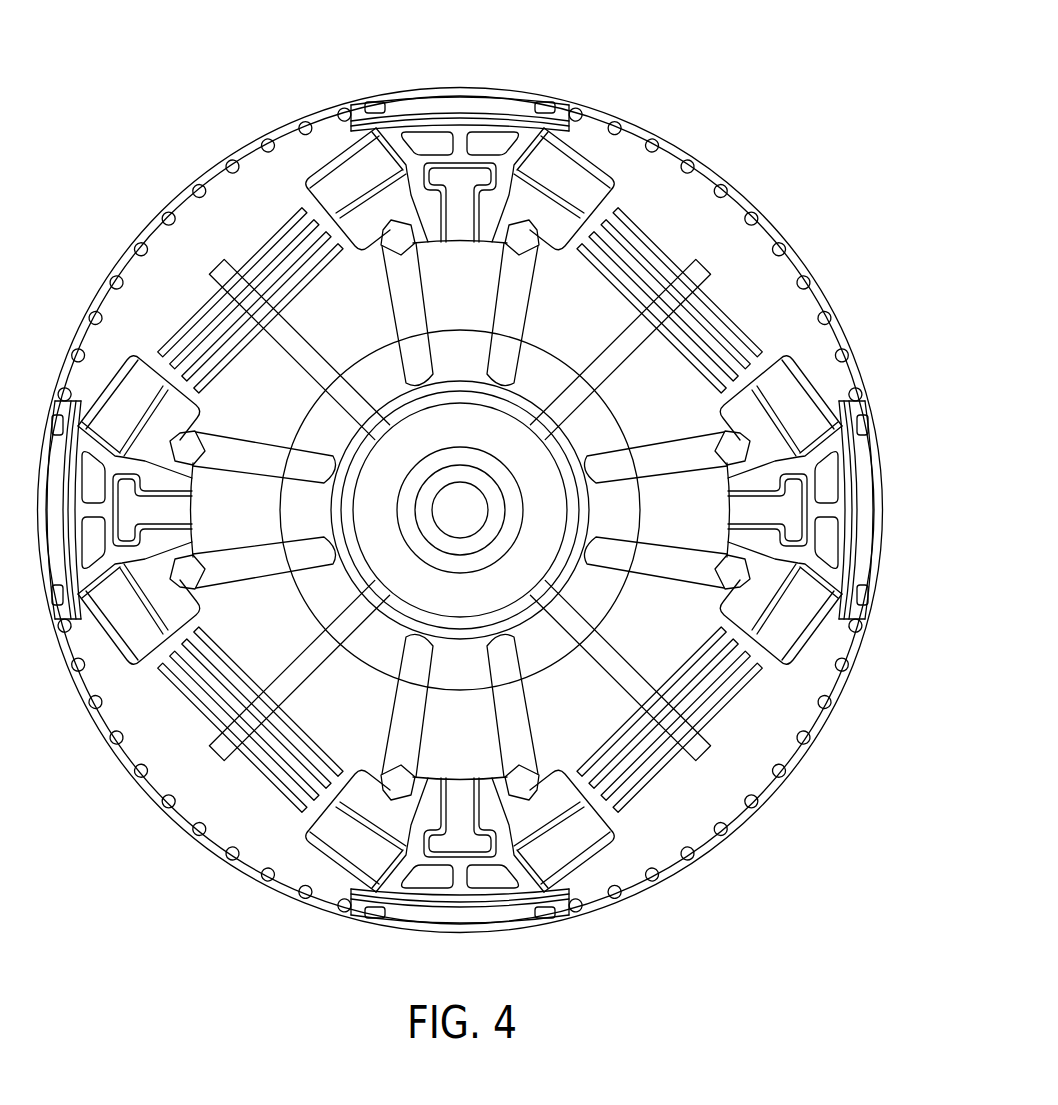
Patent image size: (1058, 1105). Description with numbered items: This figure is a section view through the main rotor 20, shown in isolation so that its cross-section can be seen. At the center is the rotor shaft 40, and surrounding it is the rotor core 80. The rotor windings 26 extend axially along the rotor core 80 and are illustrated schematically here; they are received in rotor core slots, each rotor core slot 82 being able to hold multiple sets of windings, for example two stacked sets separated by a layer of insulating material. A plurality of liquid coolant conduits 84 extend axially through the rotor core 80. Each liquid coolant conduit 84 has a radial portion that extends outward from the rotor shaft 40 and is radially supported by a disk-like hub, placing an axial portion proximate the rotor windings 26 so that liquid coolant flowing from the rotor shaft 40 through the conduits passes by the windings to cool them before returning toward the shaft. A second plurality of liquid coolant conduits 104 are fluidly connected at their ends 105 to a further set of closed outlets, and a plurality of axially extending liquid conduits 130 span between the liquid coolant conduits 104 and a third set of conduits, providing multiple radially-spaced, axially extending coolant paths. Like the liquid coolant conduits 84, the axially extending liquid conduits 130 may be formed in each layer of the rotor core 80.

The main rotor 20 is at (674, 119).
The rotor windings 26 is at (129, 385).
The rotor shaft 40 is at (430, 440).
The rotor core 80 is at (164, 302).
The rotor core slot 82 is at (832, 490).
The liquid coolant conduits 84 is at (522, 300).
The second plurality of liquid coolant conduits 104 is at (634, 340).
The ends of the second plurality of liquid coolant conduits 105 is at (569, 408).
The axially extending liquid conduits 130 is at (727, 318).